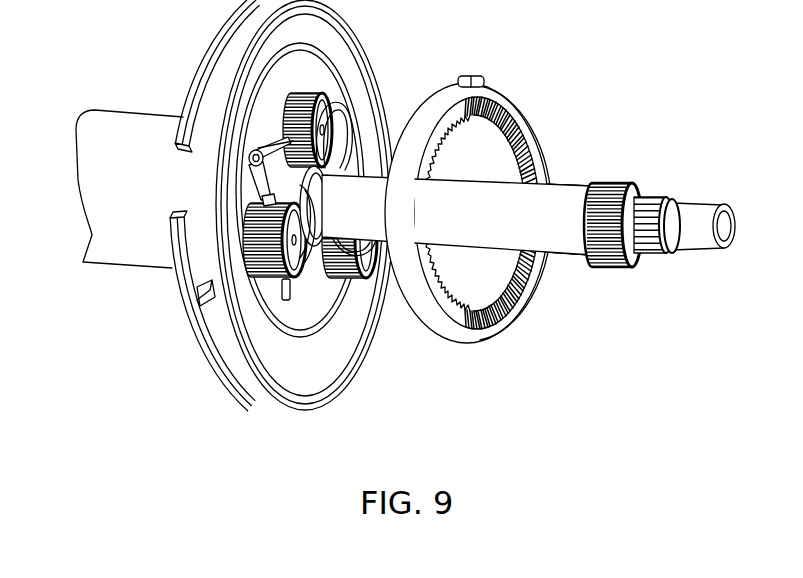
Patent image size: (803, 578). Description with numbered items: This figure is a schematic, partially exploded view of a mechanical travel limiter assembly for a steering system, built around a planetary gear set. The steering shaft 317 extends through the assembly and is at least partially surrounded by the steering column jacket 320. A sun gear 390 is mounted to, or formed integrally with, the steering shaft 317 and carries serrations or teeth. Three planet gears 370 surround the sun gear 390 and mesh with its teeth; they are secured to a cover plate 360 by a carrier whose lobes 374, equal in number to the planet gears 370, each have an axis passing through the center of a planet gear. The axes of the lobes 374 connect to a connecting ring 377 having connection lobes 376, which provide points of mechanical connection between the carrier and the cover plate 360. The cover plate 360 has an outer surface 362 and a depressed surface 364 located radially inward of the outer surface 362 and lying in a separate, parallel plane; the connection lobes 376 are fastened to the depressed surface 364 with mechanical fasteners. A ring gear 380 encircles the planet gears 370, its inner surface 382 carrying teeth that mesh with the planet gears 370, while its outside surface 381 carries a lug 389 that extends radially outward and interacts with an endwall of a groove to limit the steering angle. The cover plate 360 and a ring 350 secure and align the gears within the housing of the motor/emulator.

The steering shaft 317 is at (702, 233).
The steering column jacket 320 is at (112, 143).
The ring 350 is at (186, 288).
The cover plate 360 is at (241, 356).
The outer surface 362 is at (233, 338).
The depressed surface 364 is at (276, 312).
The planet gears 370 is at (318, 96).
The lobes 374 is at (344, 129).
The connection lobes 376 is at (258, 151).
The connecting ring 377 is at (257, 190).
The ring gear 380 is at (481, 205).
The outside surface 381 is at (440, 91).
The inner surface 382 is at (523, 132).
The lug 389 is at (473, 76).
The sun gear 390 is at (610, 194).